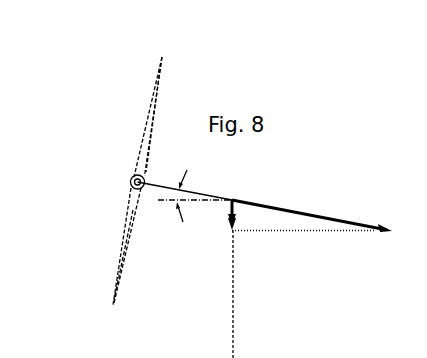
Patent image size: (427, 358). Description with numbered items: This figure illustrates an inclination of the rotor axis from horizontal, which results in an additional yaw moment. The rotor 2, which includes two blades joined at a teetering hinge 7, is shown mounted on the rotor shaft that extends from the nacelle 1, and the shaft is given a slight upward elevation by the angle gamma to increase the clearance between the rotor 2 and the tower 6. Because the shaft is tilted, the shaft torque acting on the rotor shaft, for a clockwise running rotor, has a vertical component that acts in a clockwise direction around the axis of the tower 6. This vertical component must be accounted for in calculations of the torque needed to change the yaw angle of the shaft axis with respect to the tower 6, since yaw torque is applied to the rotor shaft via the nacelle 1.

The nacelle 1 is at (253, 203).
The rotor 2 is at (150, 118).
The tower 6 is at (232, 292).
The teetering hinge 7 is at (130, 180).